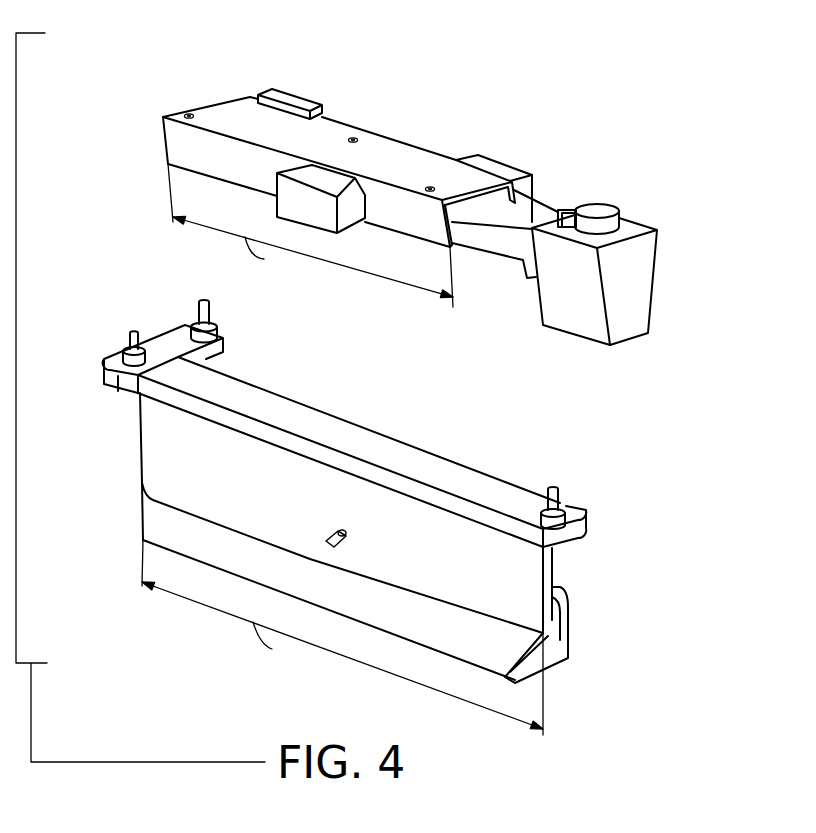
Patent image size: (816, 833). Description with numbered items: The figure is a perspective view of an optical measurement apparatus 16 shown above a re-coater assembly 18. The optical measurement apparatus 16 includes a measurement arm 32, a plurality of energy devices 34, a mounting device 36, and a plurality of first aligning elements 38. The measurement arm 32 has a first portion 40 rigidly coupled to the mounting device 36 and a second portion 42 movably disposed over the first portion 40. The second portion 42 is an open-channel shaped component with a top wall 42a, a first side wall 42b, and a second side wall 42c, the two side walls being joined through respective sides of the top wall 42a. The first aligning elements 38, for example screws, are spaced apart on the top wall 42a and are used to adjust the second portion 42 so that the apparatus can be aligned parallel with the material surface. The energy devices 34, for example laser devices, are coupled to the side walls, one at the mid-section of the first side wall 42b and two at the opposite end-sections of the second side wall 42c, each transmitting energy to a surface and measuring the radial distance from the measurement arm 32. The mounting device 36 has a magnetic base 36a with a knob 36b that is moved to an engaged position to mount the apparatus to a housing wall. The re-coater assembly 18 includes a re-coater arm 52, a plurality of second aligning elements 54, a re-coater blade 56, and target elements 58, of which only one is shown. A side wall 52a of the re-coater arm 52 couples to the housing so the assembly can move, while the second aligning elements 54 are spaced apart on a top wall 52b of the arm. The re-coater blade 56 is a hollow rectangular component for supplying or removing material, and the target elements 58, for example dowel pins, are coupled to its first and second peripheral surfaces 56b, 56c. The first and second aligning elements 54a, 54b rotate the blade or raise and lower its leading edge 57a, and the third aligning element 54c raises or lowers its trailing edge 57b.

The optical measurement apparatus 16 is at (223, 100).
The re-coater assembly 18 is at (294, 405).
The measurement arm 32 is at (421, 243).
The energy devices 34 is at (287, 104).
The mounting device 36 is at (562, 307).
The magnetic base 36a is at (642, 229).
The knob 36b is at (602, 207).
The first aligning elements 38 is at (188, 113).
The first portion 40 is at (495, 240).
The second portion 42 is at (294, 127).
The top wall 42a is at (325, 137).
The first side wall 42b is at (446, 230).
The second side wall 42c is at (508, 186).
The re-coater arm 52 is at (431, 464).
The side wall 52a is at (155, 338).
The top wall 52b is at (363, 440).
The second aligning elements 54 is at (212, 342).
The first aligning element 54a is at (123, 357).
The second aligning element 54b is at (188, 330).
The third aligning element 54c is at (548, 489).
The re-coater blade 56 is at (182, 528).
The first peripheral surface 56b is at (457, 528).
The second peripheral surface 56c is at (557, 573).
The leading edge 57a is at (138, 423).
The trailing edge 57b is at (567, 617).
The target elements 58 is at (348, 533).